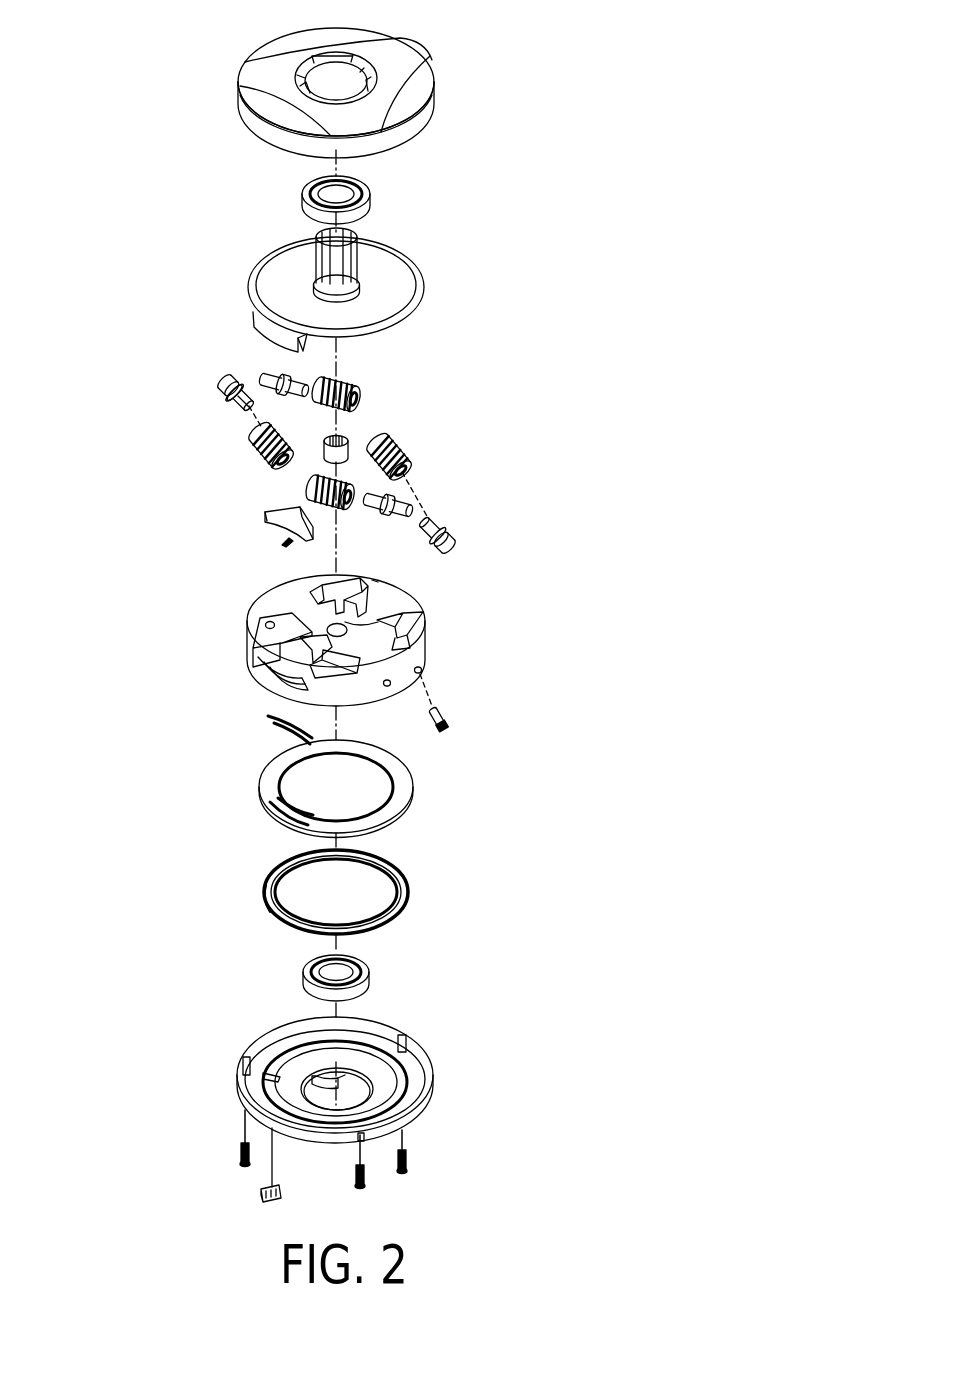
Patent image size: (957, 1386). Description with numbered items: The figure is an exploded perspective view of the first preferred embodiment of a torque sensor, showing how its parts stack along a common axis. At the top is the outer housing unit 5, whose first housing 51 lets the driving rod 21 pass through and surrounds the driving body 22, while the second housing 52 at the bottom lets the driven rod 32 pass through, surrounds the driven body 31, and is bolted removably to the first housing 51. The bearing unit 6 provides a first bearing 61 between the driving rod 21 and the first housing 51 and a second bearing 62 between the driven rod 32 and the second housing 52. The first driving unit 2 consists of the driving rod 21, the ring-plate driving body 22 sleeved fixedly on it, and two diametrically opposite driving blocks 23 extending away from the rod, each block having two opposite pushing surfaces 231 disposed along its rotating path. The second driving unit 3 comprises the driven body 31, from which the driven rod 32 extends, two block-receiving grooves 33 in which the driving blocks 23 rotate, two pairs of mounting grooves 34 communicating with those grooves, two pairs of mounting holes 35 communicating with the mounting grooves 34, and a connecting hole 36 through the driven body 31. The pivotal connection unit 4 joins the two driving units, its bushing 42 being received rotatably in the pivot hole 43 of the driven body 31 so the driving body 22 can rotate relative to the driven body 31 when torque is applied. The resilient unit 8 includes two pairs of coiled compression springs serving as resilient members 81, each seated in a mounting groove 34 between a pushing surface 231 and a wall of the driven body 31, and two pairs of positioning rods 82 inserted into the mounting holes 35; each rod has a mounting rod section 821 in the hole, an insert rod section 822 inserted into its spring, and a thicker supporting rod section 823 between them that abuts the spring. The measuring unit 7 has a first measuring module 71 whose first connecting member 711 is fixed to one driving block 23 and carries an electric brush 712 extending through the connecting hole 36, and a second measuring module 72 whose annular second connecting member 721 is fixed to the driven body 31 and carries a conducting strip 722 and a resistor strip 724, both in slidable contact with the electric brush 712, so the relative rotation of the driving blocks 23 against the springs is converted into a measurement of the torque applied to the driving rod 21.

The first driving unit 2 is at (338, 283).
The driving rod 21 is at (325, 240).
The driving body 22 is at (273, 265).
The driving blocks 23 is at (255, 318).
The pushing surfaces 231 is at (307, 340).
The second driving unit 3 is at (325, 629).
The driven body 31 is at (258, 633).
The driven rod 32 is at (332, 705).
The block-receiving grooves 33 is at (377, 576).
The mounting grooves 34 is at (290, 640).
The mounting holes 35 is at (270, 622).
The connecting hole 36 is at (285, 678).
The pivotal connection unit 4 is at (328, 436).
The bushing 42 is at (330, 455).
The pivot hole 43 is at (370, 617).
The outer housing unit 5 is at (392, 84).
The first housing 51 is at (397, 50).
The second housing 52 is at (417, 1110).
The bearing unit 6 is at (339, 192).
The first bearing 61 is at (310, 192).
The second bearing 62 is at (302, 995).
The measuring unit 7 is at (321, 820).
The first measuring module 71 is at (196, 527).
The first connecting member 711 is at (268, 512).
The electric brush 712 is at (283, 542).
The second measuring module 72 is at (400, 820).
The second connecting member 721 is at (268, 790).
The conducting strip 722 is at (276, 733).
The resistor strip 724 is at (315, 730).
The resilient unit 8 is at (311, 443).
The resilient members 81 is at (356, 387).
The positioning rods 82 is at (311, 443).
The mounting rod section 821 is at (225, 381).
The insert rod section 822 is at (238, 403).
The supporting rod section 823 is at (228, 392).